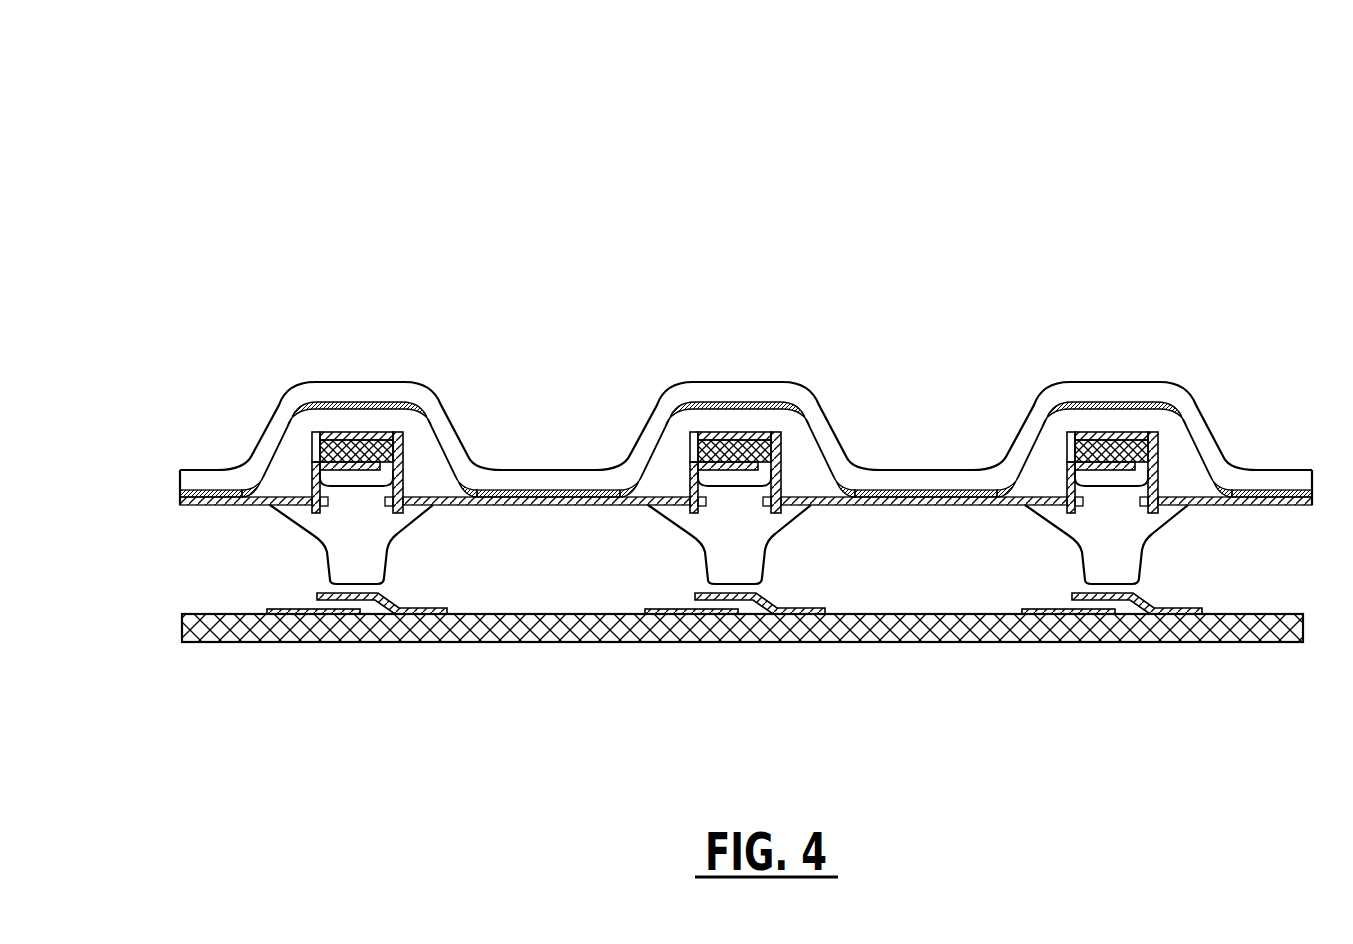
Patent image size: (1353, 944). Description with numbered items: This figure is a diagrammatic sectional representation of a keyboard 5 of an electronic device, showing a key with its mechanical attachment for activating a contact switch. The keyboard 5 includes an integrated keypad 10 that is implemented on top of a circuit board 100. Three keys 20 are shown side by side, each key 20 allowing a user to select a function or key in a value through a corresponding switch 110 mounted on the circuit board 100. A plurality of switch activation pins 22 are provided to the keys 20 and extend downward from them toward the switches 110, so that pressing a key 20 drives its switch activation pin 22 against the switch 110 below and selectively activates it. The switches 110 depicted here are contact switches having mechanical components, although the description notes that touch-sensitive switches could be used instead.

The integrated keypad 10 is at (803, 184).
The keyboard 5 is at (163, 480).
The key 20 is at (477, 378).
The switch activation pin 22 is at (340, 548).
The switch 110 is at (407, 597).
The circuit board 100 is at (563, 641).